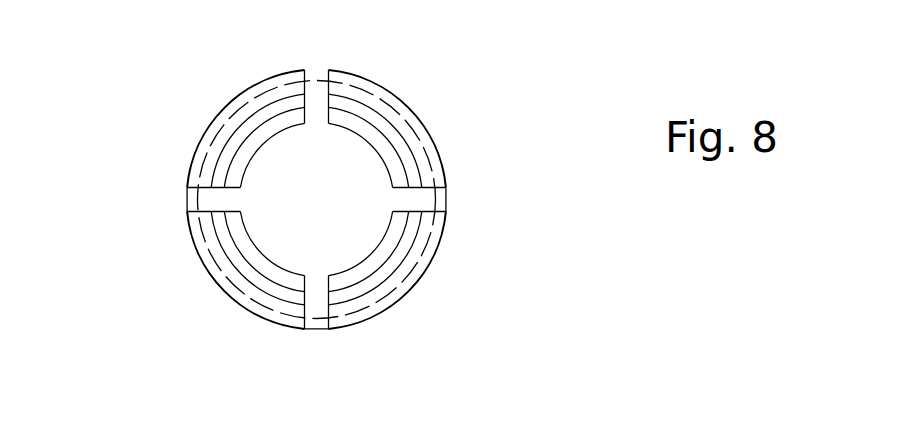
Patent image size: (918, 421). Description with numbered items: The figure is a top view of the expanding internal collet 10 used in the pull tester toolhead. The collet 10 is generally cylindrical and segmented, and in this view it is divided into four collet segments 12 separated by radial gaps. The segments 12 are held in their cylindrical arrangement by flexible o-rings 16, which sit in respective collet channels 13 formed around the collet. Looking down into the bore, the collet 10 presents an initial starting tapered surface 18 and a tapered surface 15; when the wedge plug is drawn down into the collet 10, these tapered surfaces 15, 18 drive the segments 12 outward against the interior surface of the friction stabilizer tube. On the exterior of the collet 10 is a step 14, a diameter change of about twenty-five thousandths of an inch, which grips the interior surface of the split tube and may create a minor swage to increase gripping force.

The expanding internal collet 10 is at (182, 112).
The collet segments 12 is at (235, 99).
The collet channels 13 is at (214, 246).
The step 14 is at (252, 318).
The tapered surface 15 is at (398, 156).
The flexible o-rings 16 is at (315, 70).
The initial starting tapered surface 18 is at (400, 116).